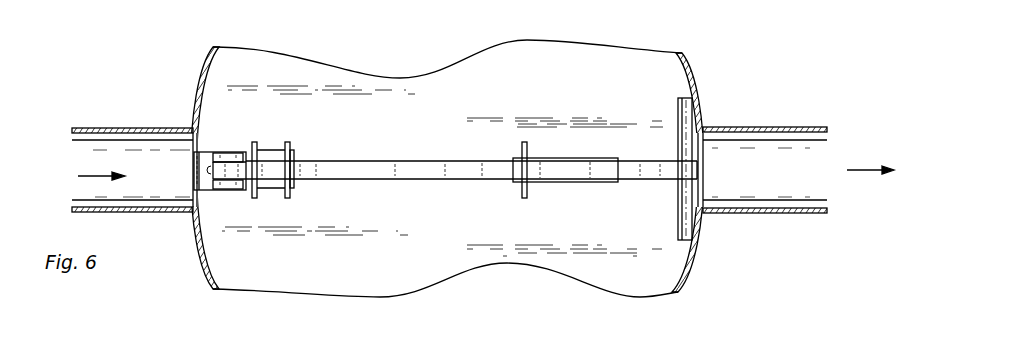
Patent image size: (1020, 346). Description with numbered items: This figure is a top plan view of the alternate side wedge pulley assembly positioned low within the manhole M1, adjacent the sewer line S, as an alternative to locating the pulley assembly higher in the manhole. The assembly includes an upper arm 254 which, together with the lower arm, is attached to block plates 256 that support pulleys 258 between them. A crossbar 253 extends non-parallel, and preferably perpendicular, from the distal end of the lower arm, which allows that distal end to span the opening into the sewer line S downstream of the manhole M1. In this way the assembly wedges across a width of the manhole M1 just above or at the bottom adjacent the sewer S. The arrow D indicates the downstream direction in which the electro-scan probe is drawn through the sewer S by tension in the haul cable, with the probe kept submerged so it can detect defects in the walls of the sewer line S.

The crossbar 253 is at (688, 124).
The upper arm 254 is at (453, 165).
The block plates 256 is at (273, 152).
The pulleys 258 is at (226, 152).
The manhole M1 is at (415, 128).
The sewer S is at (117, 128).
The downstream direction D is at (97, 176).